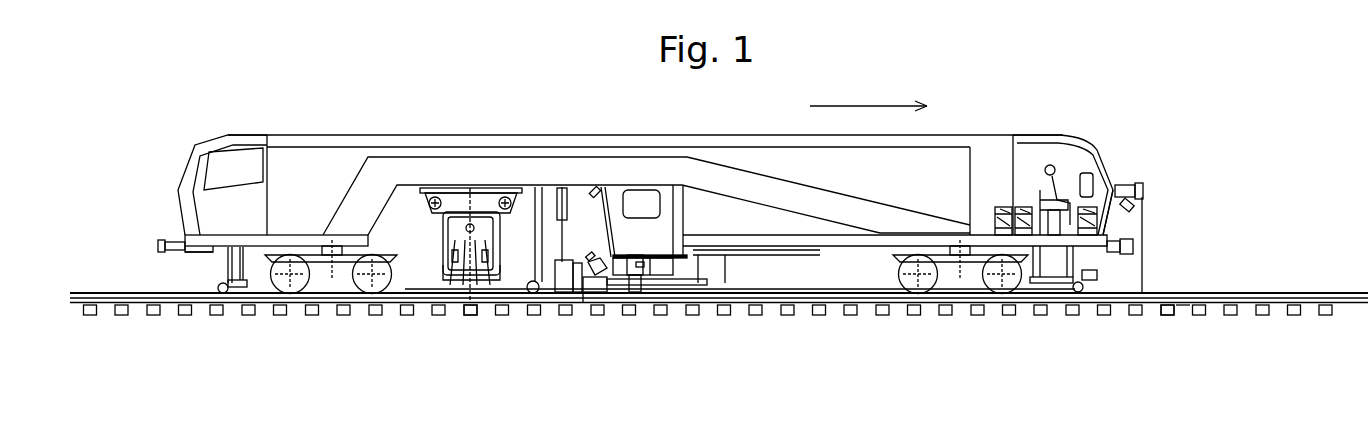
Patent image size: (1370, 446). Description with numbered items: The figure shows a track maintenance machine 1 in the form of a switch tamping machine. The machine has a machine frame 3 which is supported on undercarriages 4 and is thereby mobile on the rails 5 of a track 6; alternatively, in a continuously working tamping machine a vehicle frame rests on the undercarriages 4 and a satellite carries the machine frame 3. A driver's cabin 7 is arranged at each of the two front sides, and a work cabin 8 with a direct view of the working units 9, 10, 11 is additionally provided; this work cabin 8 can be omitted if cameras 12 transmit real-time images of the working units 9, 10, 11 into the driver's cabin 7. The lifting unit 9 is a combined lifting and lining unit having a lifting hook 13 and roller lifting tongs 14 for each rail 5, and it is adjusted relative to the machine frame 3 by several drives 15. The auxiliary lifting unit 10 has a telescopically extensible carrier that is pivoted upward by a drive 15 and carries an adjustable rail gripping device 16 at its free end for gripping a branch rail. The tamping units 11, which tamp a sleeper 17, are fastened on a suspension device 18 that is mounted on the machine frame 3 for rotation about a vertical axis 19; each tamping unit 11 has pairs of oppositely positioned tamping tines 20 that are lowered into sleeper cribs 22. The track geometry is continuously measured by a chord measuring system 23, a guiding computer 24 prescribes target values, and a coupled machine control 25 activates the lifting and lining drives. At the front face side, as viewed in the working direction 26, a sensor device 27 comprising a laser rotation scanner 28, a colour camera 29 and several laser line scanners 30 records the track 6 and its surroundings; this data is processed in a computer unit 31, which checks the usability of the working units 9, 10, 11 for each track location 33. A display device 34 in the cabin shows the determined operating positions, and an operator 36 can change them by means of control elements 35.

The track maintenance machine 1 is at (352, 93).
The machine frame 3 is at (387, 165).
The undercarriages 4 is at (363, 280).
The rails 5 is at (1267, 293).
The track 6 is at (1278, 323).
The driver's cabin 7 is at (228, 163).
The work cabin 8 is at (635, 205).
The lifting unit 9 is at (583, 317).
The auxiliary lifting unit 10 is at (638, 312).
The tamping units 11 is at (443, 268).
The cameras 12 is at (600, 187).
The lifting hook 13 is at (580, 300).
The roller lifting tongs 14 is at (560, 300).
The drives 15 is at (442, 203).
The rail gripping device 16 is at (643, 315).
The sleeper 17 is at (1167, 315).
The suspension device 18 is at (485, 198).
The vertical axis 19 is at (473, 153).
The tamping tines 20 is at (455, 283).
The sleeper cribs 22 is at (1182, 312).
The chord measuring system 23 is at (800, 290).
The guiding computer 24 is at (1023, 207).
The machine control 25 is at (1002, 207).
The working direction 26 is at (877, 105).
The sensor device 27 is at (1163, 187).
The laser rotation scanner 28 is at (1135, 183).
The colour camera 29 is at (1143, 212).
The laser line scanners 30 is at (1090, 295).
The computer unit 31 is at (1097, 223).
The track location 33 is at (472, 312).
The display device 34 is at (1093, 207).
The control elements 35 is at (1063, 195).
The operator 36 is at (1053, 163).